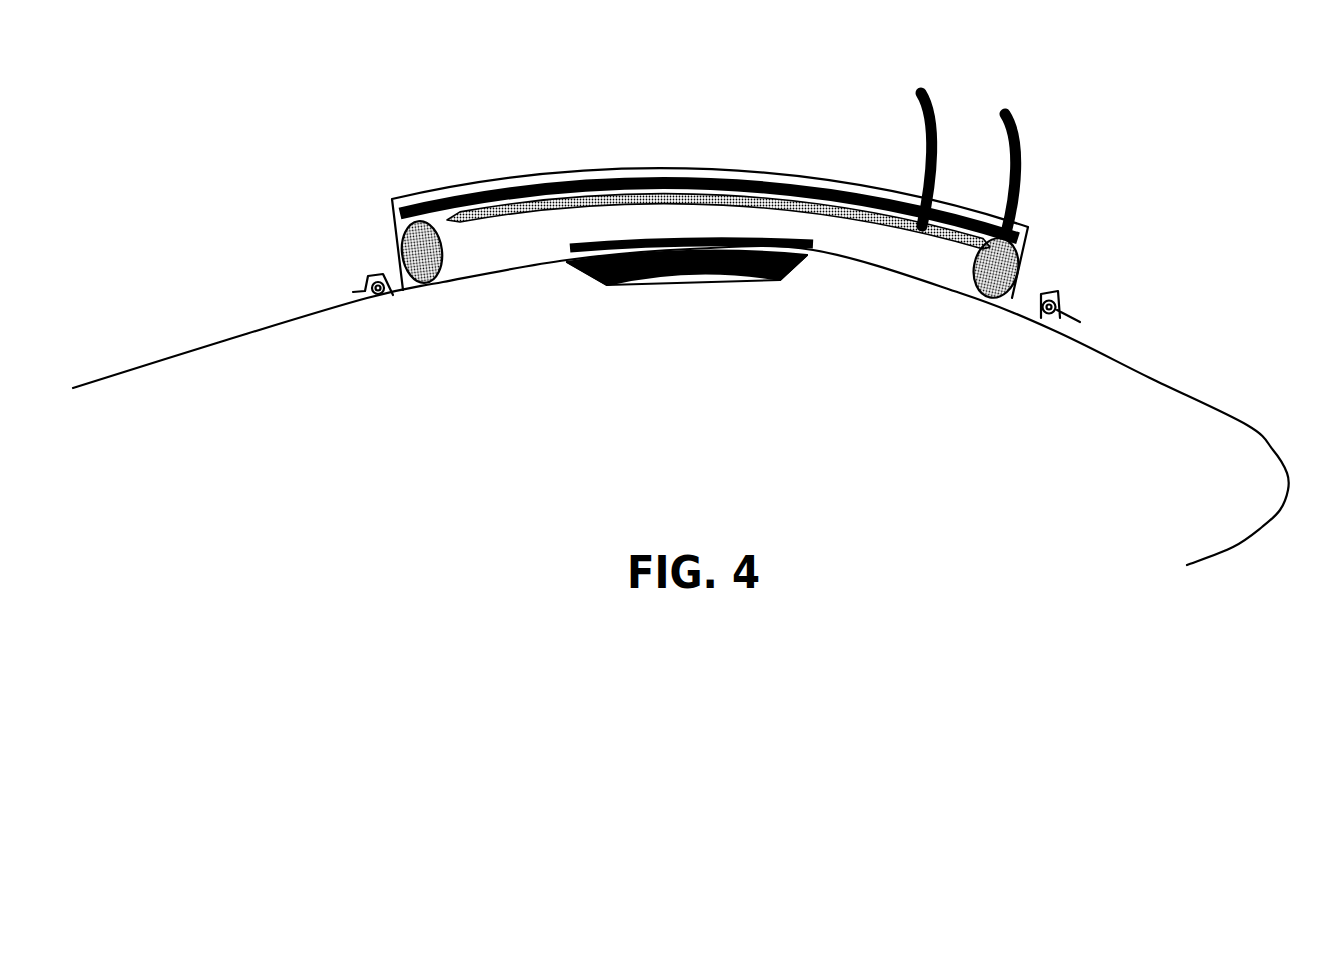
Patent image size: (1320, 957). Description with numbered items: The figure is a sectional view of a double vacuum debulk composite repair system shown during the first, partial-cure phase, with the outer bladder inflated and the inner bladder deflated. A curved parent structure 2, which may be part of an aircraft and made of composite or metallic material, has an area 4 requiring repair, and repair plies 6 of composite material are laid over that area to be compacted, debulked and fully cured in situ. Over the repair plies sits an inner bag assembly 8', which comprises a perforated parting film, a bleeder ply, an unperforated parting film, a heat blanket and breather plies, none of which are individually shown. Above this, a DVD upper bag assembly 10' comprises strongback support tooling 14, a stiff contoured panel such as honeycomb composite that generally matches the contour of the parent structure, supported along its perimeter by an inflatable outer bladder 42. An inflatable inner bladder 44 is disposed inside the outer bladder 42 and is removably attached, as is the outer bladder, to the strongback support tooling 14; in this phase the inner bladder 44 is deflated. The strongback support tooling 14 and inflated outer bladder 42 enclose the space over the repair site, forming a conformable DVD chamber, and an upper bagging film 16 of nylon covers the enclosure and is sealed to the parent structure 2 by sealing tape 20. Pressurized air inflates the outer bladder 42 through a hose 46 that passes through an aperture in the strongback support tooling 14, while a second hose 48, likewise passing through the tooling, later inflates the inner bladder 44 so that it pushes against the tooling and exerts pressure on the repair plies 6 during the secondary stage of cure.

The parent structure 2 is at (1247, 425).
The area which requires repair 4 is at (606, 284).
The repair plies 6 is at (688, 273).
The inner bag assembly 8' is at (681, 152).
The DVD upper bag assembly 10' is at (344, 109).
The strongback support tooling 14 is at (725, 177).
The upper bagging film 16 is at (393, 222).
The sealing tape 20 is at (370, 295).
The inflatable outer bladder 42 is at (410, 250).
The inflatable inner bladder 44 is at (517, 203).
The hose 46 is at (1023, 153).
The hose 48 is at (937, 127).